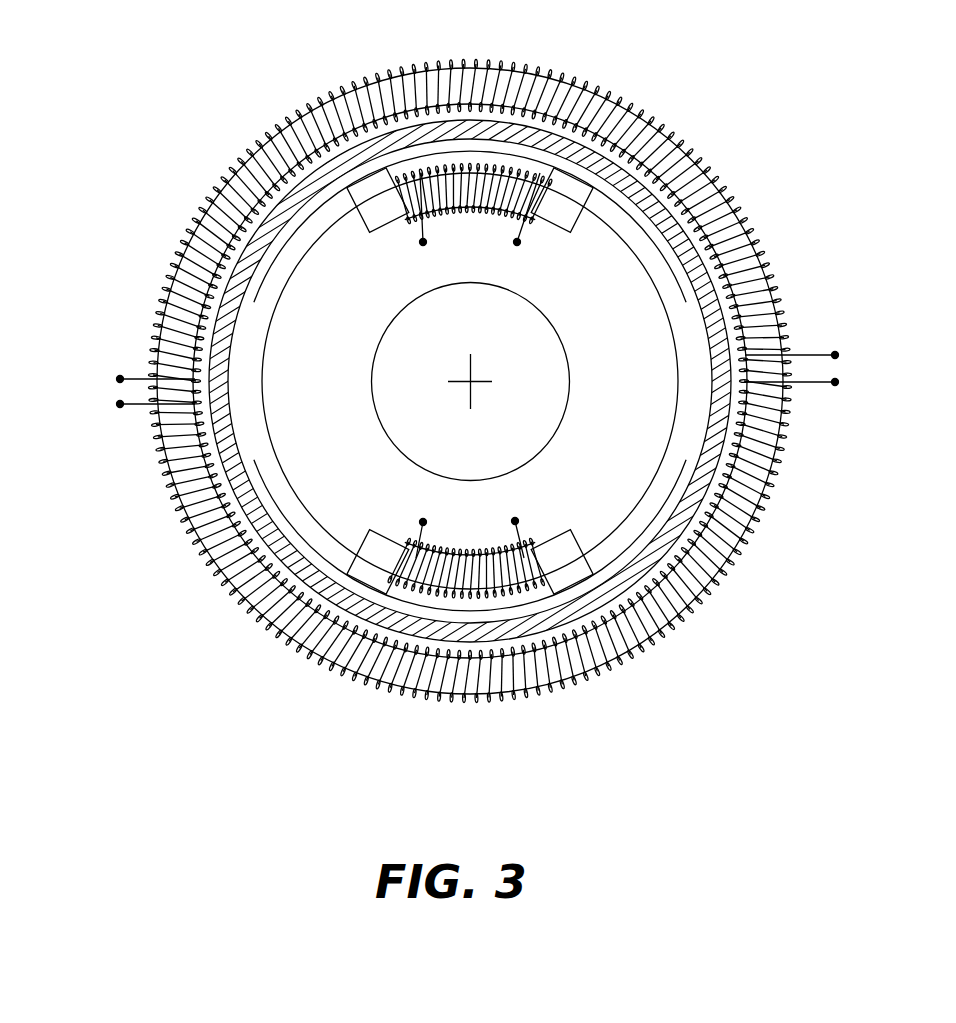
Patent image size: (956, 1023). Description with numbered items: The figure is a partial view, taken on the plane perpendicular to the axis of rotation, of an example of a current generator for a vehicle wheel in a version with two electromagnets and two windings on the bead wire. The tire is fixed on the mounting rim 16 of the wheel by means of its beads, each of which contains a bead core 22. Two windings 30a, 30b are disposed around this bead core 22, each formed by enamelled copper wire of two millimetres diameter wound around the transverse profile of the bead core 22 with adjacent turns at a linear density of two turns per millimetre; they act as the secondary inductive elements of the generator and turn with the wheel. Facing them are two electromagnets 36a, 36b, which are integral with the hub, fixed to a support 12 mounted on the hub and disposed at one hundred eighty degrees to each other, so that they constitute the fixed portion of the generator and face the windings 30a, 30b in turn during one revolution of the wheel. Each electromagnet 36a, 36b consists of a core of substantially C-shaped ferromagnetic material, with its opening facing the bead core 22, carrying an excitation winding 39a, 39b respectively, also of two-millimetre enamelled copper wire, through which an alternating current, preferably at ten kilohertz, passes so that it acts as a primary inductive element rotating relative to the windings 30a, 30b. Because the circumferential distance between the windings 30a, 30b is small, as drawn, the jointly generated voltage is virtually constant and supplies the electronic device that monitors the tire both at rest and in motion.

The support 12 is at (348, 359).
The mounting rim 16 is at (717, 372).
The bead core 22 is at (156, 391).
The first winding 30a is at (490, 83).
The second winding 30b is at (490, 683).
The first electromagnet 36a is at (553, 205).
The second electromagnet 36b is at (383, 542).
The first excitation winding 39a is at (430, 238).
The second excitation winding 39b is at (510, 522).